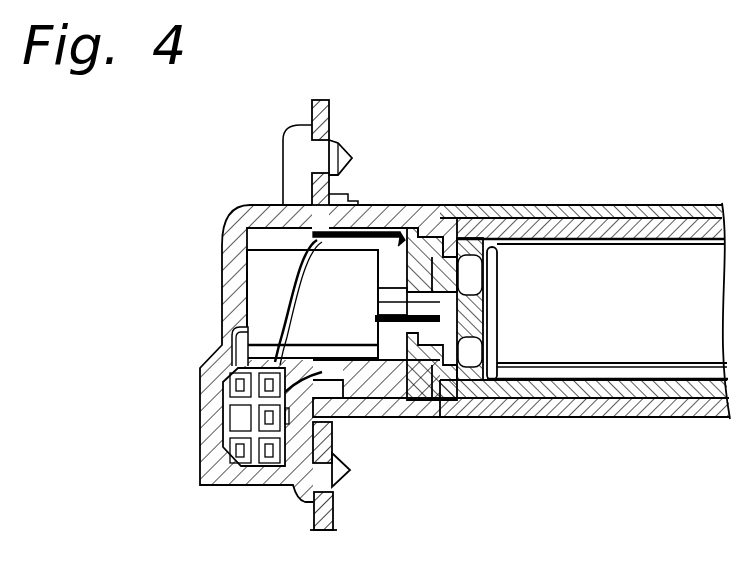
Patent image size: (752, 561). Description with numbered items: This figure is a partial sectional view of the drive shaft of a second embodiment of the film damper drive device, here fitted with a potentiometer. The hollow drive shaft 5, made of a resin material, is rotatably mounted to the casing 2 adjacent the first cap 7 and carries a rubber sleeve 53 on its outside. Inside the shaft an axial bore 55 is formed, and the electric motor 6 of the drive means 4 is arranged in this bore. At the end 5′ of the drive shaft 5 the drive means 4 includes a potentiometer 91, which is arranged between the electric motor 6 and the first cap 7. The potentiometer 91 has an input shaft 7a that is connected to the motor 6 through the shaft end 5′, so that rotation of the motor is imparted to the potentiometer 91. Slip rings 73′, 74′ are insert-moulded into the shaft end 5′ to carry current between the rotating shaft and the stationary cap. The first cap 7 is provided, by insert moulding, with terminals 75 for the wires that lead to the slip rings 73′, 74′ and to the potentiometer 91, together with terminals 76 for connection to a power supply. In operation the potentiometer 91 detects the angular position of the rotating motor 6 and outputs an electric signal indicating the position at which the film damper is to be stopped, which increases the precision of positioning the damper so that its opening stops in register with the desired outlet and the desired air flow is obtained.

The casing 2 is at (312, 113).
The drive means 4 is at (321, 96).
The drive shaft 5 is at (572, 207).
The end of the shaft 5′ is at (370, 420).
The sleeve 53 is at (633, 213).
The axial bore 55 is at (580, 418).
The electric motor 6 is at (637, 357).
The first cap 7 is at (222, 250).
The input shaft 7a is at (405, 420).
The slip ring 73′ is at (425, 238).
The slip ring 74′ is at (470, 404).
The terminals 75 is at (269, 455).
The terminals 76 is at (240, 452).
The potentiometer 91 is at (270, 260).